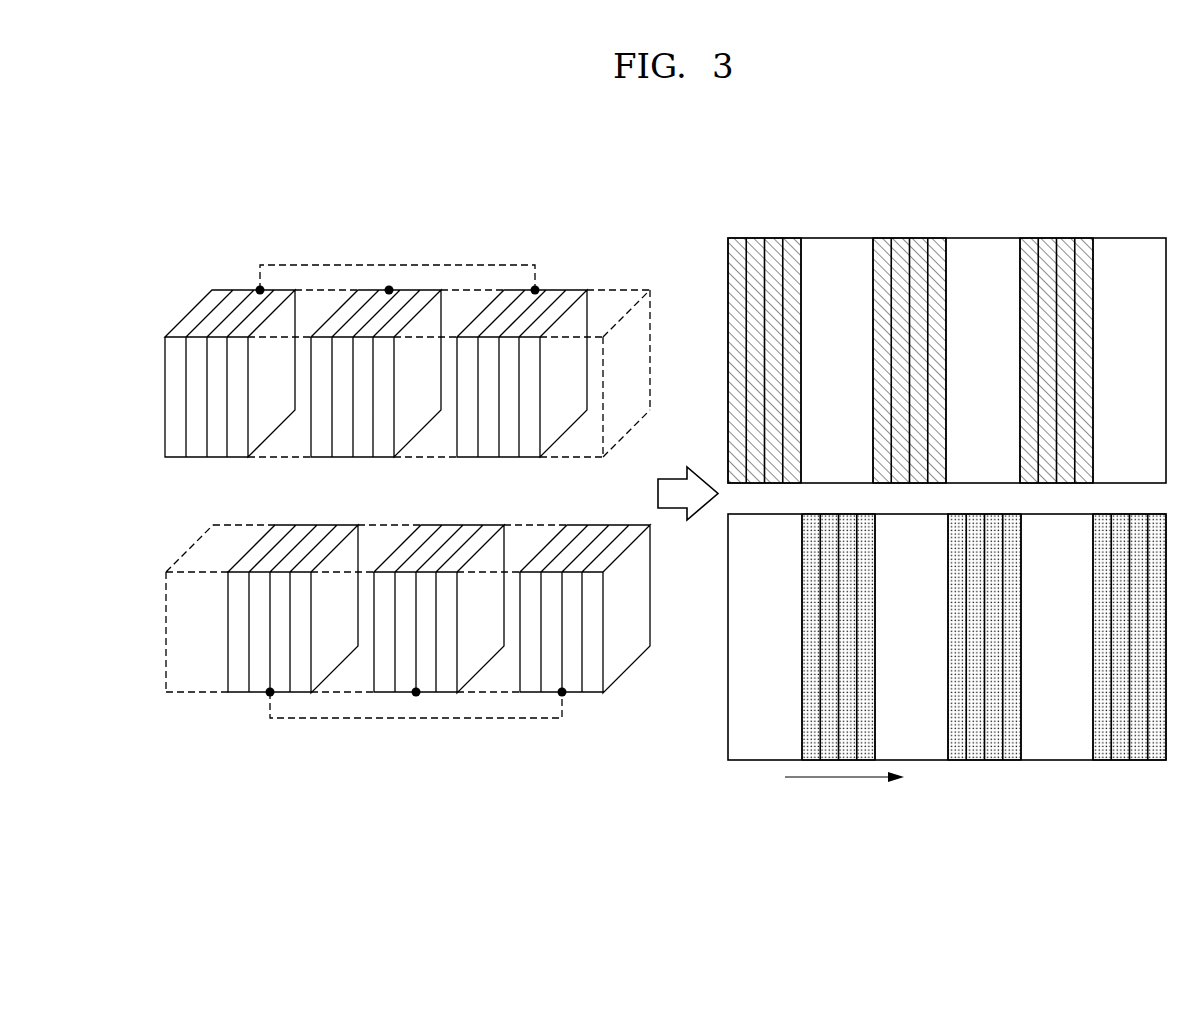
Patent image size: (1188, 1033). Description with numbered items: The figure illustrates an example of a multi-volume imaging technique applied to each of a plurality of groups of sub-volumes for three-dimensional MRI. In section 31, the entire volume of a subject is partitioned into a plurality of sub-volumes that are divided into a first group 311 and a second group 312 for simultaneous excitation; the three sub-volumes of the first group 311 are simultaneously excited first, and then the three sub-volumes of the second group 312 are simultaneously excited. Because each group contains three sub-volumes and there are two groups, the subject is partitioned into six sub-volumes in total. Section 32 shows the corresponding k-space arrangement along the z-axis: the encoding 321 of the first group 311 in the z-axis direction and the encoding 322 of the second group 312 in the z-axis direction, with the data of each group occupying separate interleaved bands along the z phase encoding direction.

The section 31 is at (552, 175).
The first group 311 is at (389, 290).
The second group 312 is at (416, 718).
The section 32 is at (1088, 200).
The encoding of first group 321 is at (987, 238).
The encoding of second group 322 is at (1056, 760).